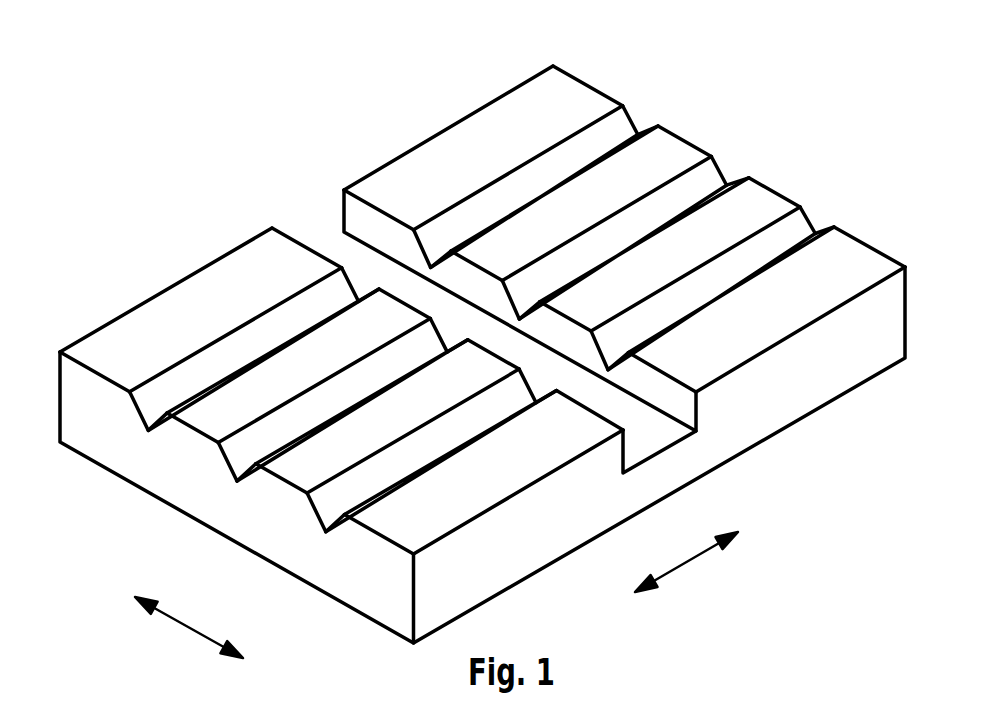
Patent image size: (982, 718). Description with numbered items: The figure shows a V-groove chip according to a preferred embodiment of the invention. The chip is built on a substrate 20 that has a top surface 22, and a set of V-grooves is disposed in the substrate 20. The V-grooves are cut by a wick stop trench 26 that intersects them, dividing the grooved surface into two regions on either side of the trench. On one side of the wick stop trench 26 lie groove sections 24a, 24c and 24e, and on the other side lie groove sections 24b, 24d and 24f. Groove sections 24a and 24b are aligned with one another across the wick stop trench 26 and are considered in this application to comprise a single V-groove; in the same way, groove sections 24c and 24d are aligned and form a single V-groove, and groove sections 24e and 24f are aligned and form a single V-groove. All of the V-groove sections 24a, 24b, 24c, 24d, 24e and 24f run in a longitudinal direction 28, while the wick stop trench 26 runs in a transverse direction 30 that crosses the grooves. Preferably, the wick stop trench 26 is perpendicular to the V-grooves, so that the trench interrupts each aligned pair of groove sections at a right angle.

The substrate 20 is at (478, 592).
The top surface 22 is at (522, 130).
The V-groove section 24a is at (152, 405).
The V-groove section 24b is at (623, 133).
The V-groove section 24c is at (243, 455).
The V-groove section 24d is at (708, 187).
The V-groove section 24e is at (335, 505).
The V-groove section 24f is at (800, 235).
The wick stop trench 26 is at (333, 253).
The longitudinal direction 28 is at (687, 562).
The transverse direction 30 is at (183, 625).